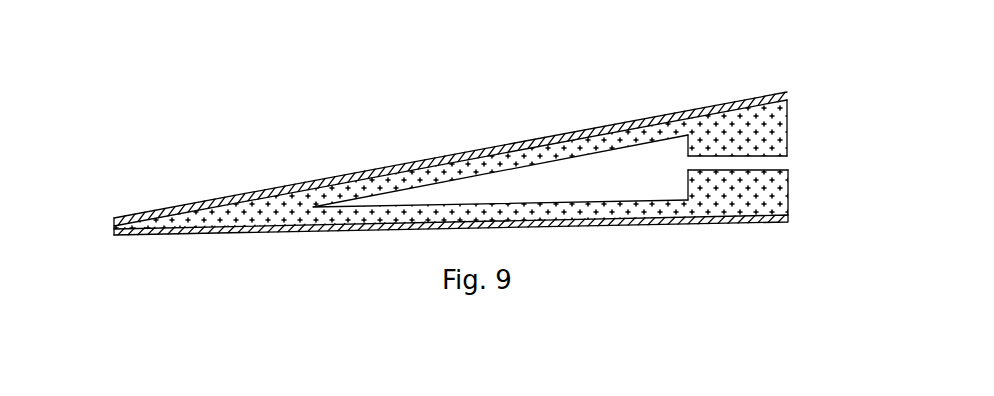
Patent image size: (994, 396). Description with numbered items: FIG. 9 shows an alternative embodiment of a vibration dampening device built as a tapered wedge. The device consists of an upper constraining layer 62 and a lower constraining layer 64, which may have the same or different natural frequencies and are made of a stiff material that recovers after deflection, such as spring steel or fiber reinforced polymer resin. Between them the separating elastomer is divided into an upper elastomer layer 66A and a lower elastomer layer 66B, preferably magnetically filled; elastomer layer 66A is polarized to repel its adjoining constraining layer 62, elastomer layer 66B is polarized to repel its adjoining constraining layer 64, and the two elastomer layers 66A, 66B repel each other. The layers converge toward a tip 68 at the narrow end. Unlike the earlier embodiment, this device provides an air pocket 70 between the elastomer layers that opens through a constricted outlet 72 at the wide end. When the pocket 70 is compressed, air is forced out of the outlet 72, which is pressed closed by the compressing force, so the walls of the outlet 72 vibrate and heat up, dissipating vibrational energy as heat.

The upper constraining layer 62 is at (784, 92).
The lower constraining layer 64 is at (782, 222).
The upper elastomer layer 66A is at (773, 130).
The lower elastomer layer 66B is at (780, 199).
The tapered tip 68 is at (115, 218).
The air pocket 70 is at (572, 170).
The constricted outlet 72 is at (768, 160).